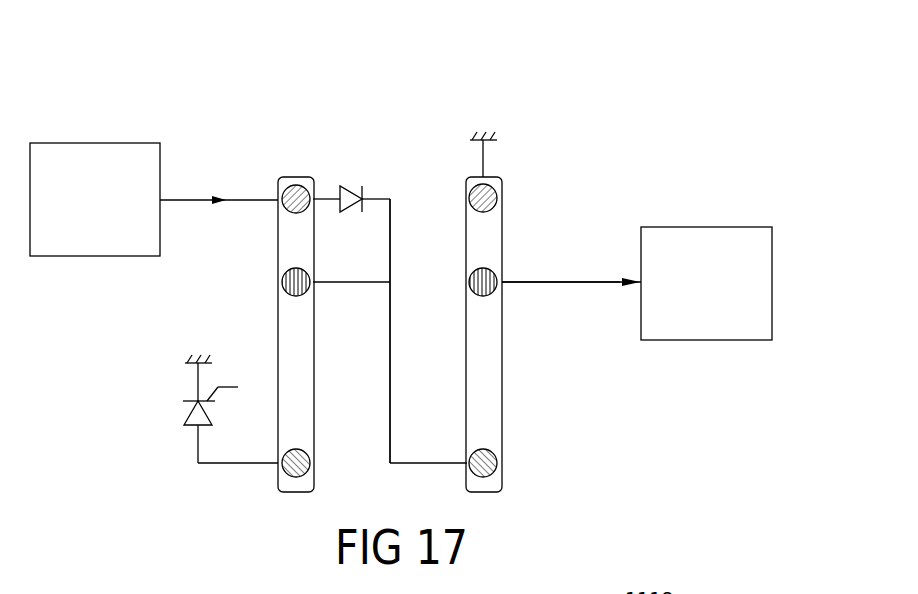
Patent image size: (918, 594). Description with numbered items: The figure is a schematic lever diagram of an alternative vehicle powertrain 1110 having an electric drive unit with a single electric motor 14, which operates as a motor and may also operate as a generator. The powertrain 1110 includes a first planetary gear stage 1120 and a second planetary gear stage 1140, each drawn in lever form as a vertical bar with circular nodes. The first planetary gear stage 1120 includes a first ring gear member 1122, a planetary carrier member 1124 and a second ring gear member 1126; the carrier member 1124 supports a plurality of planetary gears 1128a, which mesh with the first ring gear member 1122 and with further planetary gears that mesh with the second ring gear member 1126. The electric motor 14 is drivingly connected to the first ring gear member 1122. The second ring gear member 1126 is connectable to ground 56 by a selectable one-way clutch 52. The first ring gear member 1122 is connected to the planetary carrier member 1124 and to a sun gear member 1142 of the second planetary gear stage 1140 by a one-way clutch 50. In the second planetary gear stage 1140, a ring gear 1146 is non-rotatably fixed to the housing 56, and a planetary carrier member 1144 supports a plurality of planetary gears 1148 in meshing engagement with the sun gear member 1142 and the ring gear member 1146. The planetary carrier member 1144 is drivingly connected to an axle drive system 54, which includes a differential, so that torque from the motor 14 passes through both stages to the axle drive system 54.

The electric motor 14 is at (95, 199).
The axle drive system 54 is at (706, 283).
The one-way clutch 50 is at (352, 185).
The selectable one-way clutch 52 is at (193, 406).
The ground 56 is at (195, 357).
The powertrain 1110 is at (568, 69).
The first planetary gear stage 1120 is at (253, 135).
The first ring gear member 1122 is at (290, 186).
The planetary carrier member 1124 is at (377, 283).
The second ring gear member 1126 is at (302, 476).
The planetary gears 1128a is at (283, 286).
The second planetary gear stage 1140 is at (678, 142).
The sun gear member 1142 is at (490, 474).
The planetary carrier member 1144 is at (598, 281).
The ring gear 1146 is at (492, 186).
The planetary gears 1148 is at (494, 290).